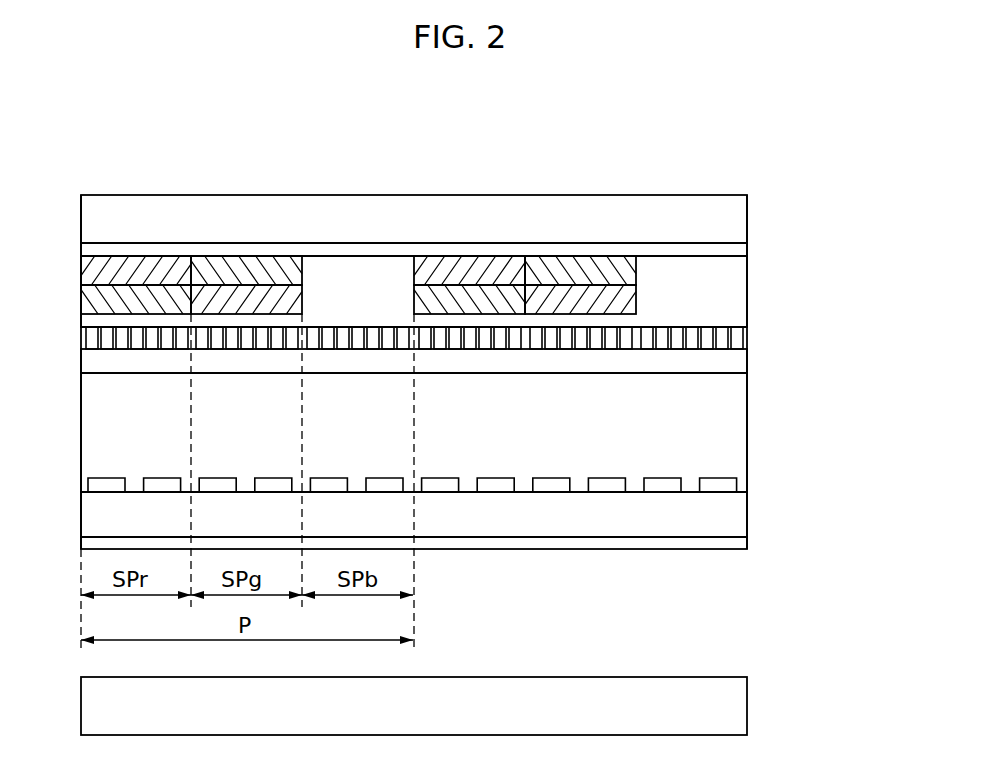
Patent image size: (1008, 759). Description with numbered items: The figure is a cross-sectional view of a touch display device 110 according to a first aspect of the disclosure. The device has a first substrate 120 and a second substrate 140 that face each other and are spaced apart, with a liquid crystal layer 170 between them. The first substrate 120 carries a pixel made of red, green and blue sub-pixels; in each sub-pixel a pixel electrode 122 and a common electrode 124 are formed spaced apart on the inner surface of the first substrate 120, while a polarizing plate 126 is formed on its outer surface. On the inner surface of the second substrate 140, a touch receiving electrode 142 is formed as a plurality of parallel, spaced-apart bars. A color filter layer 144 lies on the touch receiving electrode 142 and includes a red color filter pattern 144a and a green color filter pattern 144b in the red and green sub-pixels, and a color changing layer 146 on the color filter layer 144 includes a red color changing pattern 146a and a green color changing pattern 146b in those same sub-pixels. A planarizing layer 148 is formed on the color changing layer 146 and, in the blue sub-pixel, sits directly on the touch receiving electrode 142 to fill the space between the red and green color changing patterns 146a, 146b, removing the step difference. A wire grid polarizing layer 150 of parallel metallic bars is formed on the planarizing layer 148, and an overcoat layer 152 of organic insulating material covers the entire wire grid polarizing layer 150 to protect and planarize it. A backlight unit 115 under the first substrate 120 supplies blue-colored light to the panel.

The touch display device 110 is at (457, 175).
The backlight unit 115 is at (747, 702).
The first substrate 120 is at (747, 511).
The pixel electrode 122 is at (438, 493).
The common electrode 124 is at (502, 493).
The polarizing plate 126 is at (747, 541).
The second substrate 140 is at (747, 222).
The touch receiving electrode 142 is at (747, 250).
The color filter layer 144 is at (358, 192).
The red color filter pattern 144a is at (137, 256).
The green color filter pattern 144b is at (253, 256).
The color changing layer 146 is at (358, 370).
The red color changing pattern 146a is at (147, 315).
The green color changing pattern 146b is at (242, 315).
The planarizing layer 148 is at (747, 288).
The wire grid polarizing layer 150 is at (747, 337).
The overcoat layer 152 is at (747, 368).
The liquid crystal layer 170 is at (747, 417).